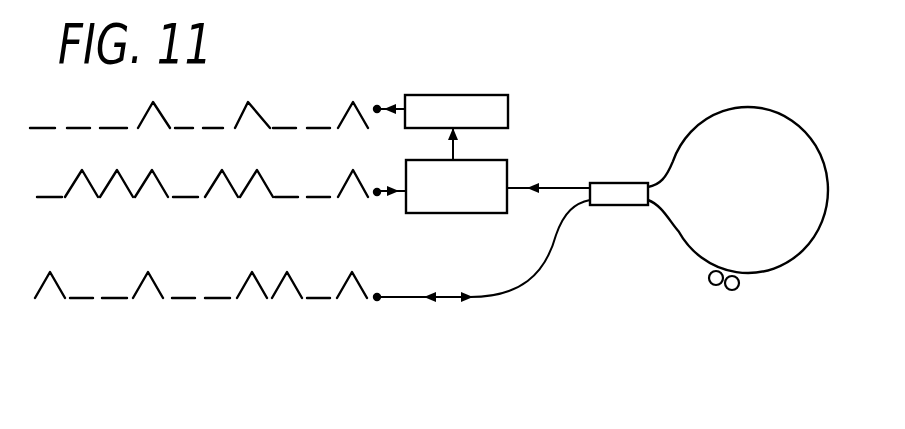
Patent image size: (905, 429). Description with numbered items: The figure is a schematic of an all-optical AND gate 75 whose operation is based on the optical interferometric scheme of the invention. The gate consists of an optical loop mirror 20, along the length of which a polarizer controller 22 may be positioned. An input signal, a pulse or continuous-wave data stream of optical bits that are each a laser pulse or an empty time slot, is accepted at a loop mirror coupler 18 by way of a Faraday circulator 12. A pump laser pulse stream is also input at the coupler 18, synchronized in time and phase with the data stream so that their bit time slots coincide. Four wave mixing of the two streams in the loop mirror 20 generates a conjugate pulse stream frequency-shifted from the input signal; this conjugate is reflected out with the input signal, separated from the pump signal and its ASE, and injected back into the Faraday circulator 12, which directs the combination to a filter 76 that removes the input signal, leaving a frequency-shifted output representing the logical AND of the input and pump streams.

The all-optical AND gate 75 is at (599, 314).
The filter 76 is at (463, 124).
The Faraday circulator 12 is at (463, 197).
The loop mirror coupler 18 is at (617, 192).
The optical loop mirror 20 is at (807, 247).
The polarizer controller 22 is at (729, 290).